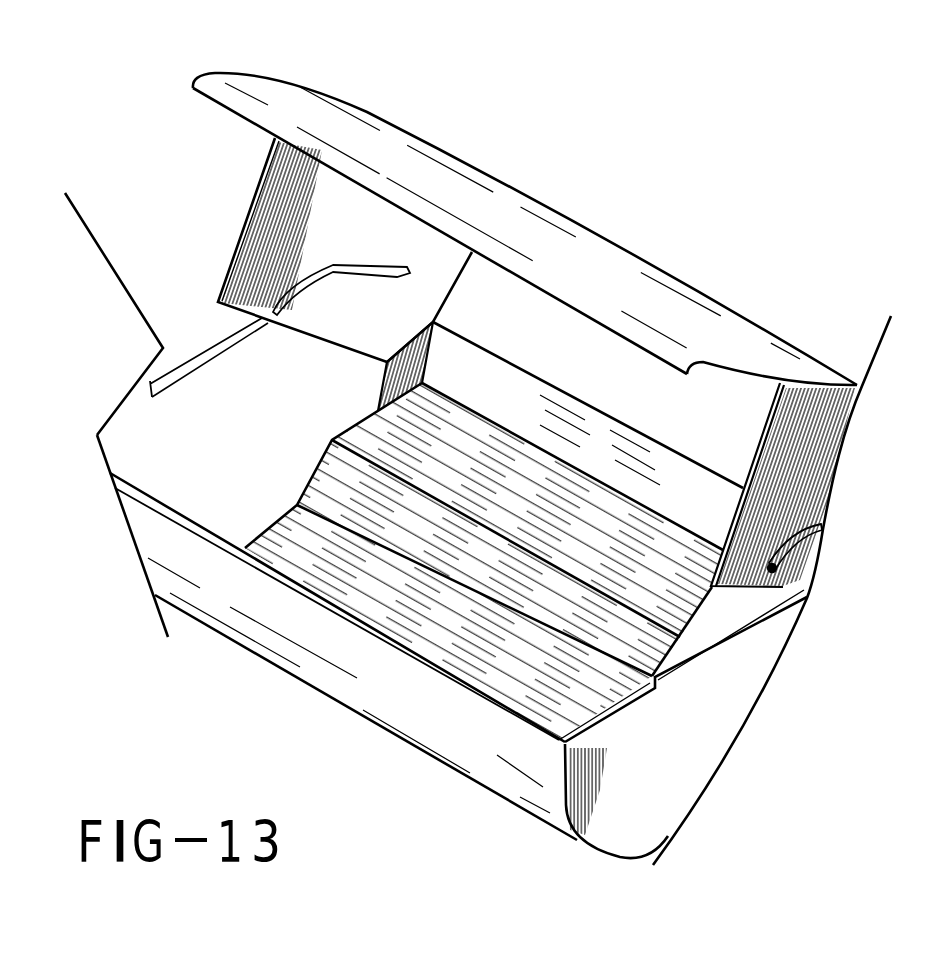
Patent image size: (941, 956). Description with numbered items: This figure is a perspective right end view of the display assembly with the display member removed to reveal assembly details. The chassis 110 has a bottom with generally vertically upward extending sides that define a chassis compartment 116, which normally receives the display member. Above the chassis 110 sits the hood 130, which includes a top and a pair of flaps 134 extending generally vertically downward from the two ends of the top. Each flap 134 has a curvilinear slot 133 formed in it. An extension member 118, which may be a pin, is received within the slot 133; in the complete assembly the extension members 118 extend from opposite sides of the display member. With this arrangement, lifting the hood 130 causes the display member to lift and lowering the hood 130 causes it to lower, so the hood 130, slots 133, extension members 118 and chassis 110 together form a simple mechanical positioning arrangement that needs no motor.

The chassis 110 is at (668, 721).
The chassis compartment 116 is at (548, 705).
The extension member 118 is at (777, 575).
The hood 130 is at (343, 262).
The slot 133 is at (287, 283).
The flap 134 is at (247, 208).